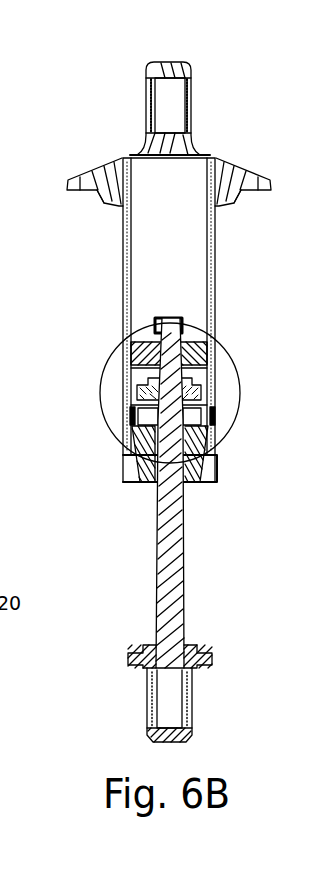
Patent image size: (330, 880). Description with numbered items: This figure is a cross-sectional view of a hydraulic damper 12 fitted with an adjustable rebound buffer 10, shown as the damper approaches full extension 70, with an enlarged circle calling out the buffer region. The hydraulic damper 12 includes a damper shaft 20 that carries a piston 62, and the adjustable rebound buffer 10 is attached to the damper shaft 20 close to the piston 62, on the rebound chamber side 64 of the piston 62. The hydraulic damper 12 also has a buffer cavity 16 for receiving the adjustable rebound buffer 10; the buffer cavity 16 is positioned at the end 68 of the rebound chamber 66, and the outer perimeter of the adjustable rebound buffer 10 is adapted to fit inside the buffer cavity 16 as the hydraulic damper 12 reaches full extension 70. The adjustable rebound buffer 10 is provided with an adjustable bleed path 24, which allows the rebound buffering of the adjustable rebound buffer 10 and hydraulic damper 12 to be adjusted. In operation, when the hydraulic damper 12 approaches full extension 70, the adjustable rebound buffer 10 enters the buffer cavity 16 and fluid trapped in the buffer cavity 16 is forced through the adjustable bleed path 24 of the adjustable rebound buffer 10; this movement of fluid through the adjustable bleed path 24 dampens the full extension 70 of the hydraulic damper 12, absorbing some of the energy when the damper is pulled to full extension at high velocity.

The hydraulic damper 12 is at (92, 97).
The full extension 70 is at (262, 303).
The piston 62 is at (152, 342).
The rebound chamber 66 is at (197, 372).
The rebound chamber side 64 is at (137, 393).
The adjustable rebound buffer 10 is at (193, 369).
The end of rebound chamber 68 is at (112, 418).
The buffer cavity 16 is at (204, 414).
The adjustable bleed path 24 is at (116, 436).
The damper shaft 20 is at (170, 508).